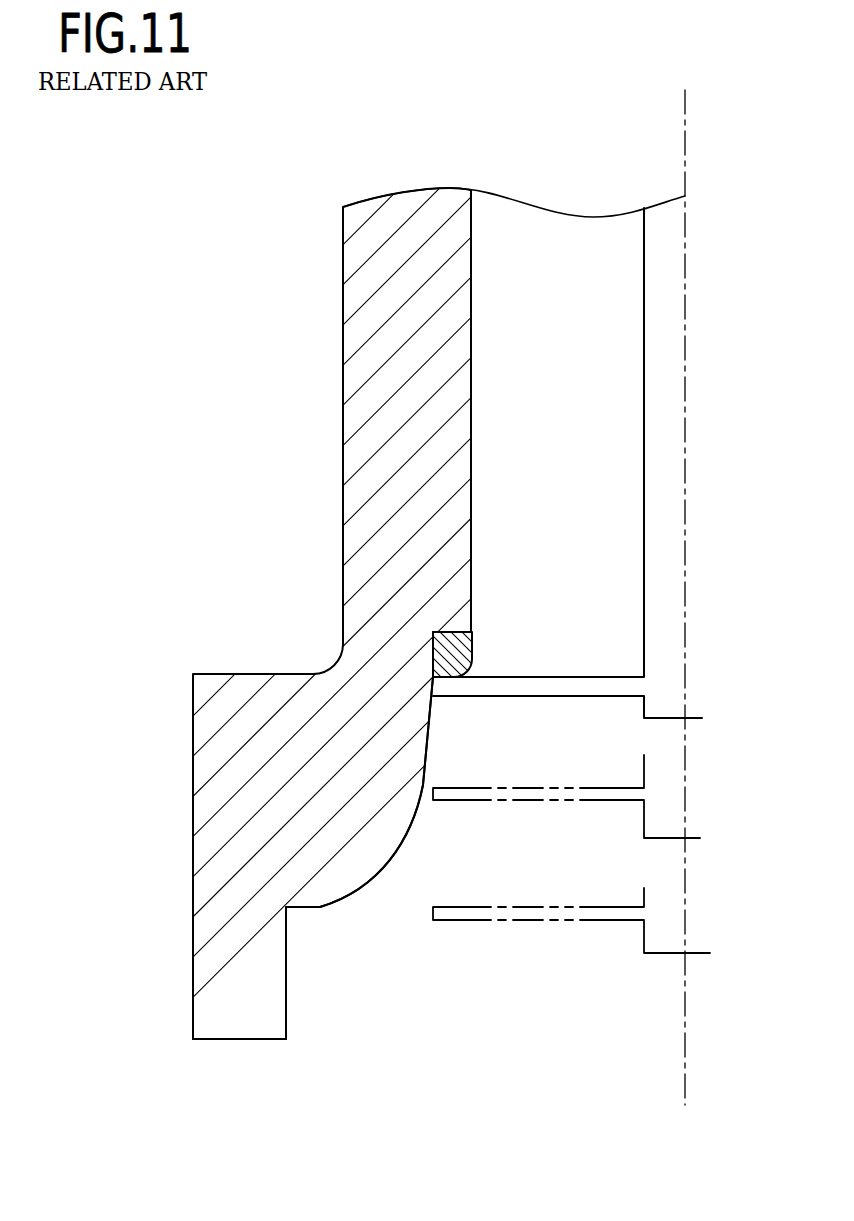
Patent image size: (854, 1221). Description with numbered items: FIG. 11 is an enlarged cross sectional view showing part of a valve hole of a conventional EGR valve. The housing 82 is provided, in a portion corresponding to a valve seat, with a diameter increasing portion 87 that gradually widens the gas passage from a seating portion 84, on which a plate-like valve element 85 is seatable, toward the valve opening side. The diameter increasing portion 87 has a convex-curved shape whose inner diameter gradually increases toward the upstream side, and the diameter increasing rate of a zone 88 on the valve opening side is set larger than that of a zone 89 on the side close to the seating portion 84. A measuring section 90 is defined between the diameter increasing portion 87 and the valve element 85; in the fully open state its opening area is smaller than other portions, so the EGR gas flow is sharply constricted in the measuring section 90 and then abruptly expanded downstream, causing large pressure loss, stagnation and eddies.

The rotating body 82 is at (320, 428).
The seal member 84 is at (487, 660).
The plate 85 is at (577, 677).
The bolt 87 is at (433, 770).
The flange portion 88 is at (357, 886).
The boundary point 89 is at (429, 723).
The curved surface 90 is at (427, 795).